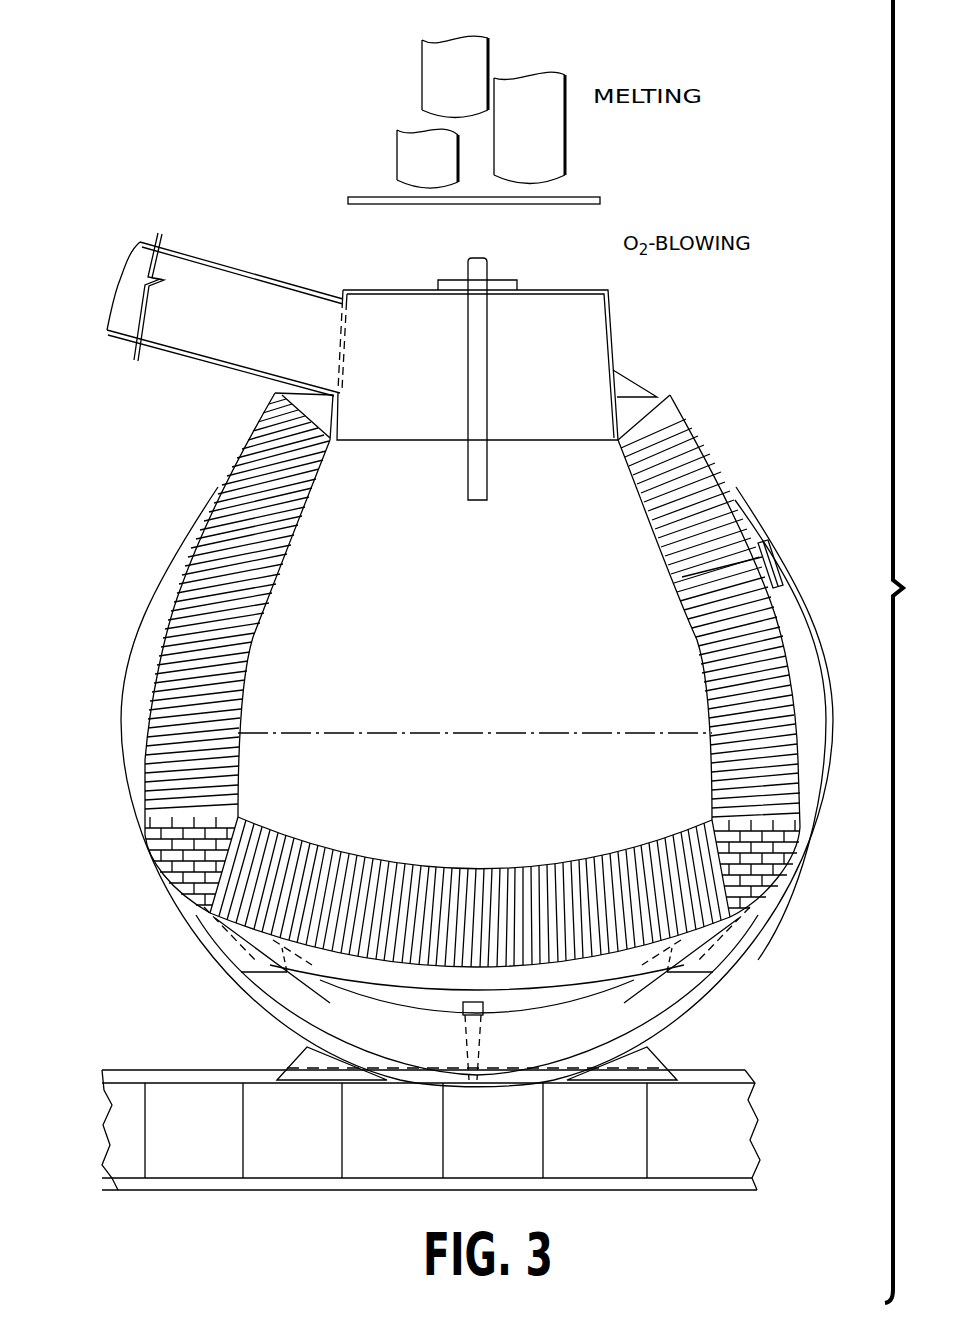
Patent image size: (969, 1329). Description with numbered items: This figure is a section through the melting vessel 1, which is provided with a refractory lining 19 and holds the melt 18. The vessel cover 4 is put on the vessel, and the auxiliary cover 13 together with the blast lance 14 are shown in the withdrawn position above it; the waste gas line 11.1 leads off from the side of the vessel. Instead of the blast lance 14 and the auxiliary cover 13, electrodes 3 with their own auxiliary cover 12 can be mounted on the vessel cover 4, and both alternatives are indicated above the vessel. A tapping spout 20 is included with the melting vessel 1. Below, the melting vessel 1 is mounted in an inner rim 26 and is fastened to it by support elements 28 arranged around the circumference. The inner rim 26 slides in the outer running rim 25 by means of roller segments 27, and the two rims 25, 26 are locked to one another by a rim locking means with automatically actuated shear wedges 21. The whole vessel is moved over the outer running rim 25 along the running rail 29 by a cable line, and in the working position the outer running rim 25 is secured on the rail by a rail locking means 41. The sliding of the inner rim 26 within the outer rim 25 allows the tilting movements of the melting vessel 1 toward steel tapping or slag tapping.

The melting vessel 1 is at (175, 593).
The electrodes 3 is at (530, 40).
The vessel cover 4 is at (590, 340).
The waste gas line 11.1 is at (137, 272).
The auxiliary cover 12 is at (602, 201).
The auxiliary cover 13 is at (517, 285).
The blast lance 14 is at (468, 268).
The melt 18 is at (549, 804).
The lining 19 is at (236, 512).
The tapping spout 20 is at (775, 567).
The shear wedges 21 is at (483, 1007).
The outer running rim 25 is at (207, 945).
The inner rim 26 is at (277, 965).
The roller segments 27 is at (713, 972).
The support elements 28 is at (370, 988).
The running rail 29 is at (755, 1098).
The rail locking means 41 is at (645, 1062).